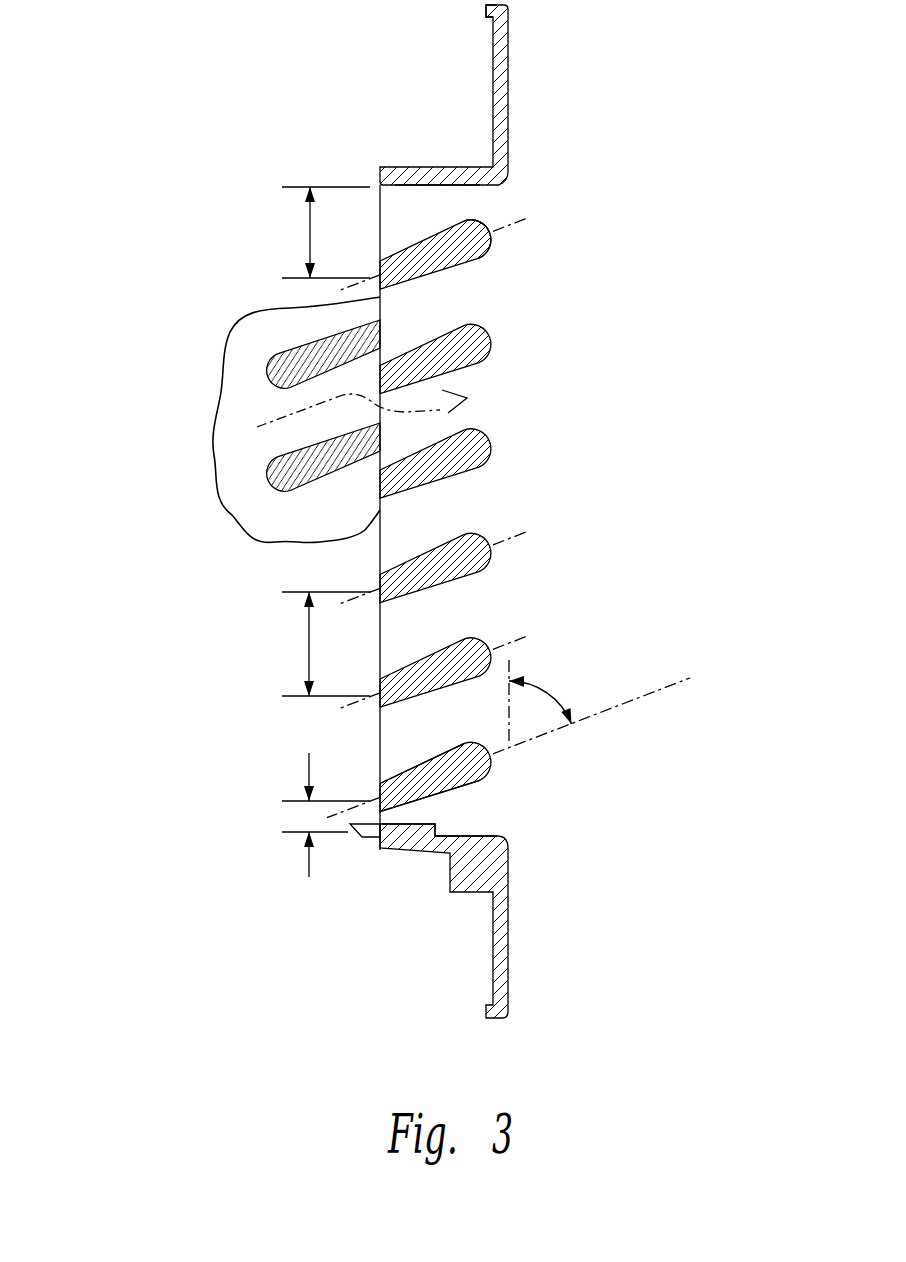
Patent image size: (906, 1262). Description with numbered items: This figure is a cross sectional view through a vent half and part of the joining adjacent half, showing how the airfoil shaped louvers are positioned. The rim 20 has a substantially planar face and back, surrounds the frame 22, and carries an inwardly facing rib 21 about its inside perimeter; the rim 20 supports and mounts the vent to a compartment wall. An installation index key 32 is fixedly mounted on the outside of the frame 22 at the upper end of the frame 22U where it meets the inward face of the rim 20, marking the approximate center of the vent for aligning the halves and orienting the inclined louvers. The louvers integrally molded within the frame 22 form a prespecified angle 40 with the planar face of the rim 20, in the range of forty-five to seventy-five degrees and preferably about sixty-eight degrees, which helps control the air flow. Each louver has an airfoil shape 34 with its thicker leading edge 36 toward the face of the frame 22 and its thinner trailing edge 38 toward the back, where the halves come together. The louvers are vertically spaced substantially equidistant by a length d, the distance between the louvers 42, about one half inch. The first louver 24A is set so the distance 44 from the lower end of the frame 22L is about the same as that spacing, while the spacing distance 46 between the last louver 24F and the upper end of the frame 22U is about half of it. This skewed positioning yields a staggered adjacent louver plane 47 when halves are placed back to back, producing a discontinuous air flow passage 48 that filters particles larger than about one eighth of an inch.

The rim 20 is at (509, 86).
The inwardly facing rib 21 is at (487, 14).
The frame 22 is at (435, 167).
The lower end of frame 22L is at (437, 187).
The upper end of frame 22U is at (490, 829).
The first louver 24A is at (457, 268).
The last louver 24F is at (494, 762).
The installation index key 32 is at (450, 883).
The airfoil shape 34 is at (495, 238).
The leading edge 36 is at (450, 793).
The trailing edge 38 is at (398, 774).
The angle 40 is at (557, 692).
The distance between the louvers 42 is at (307, 627).
The distance 22L-24A 44 is at (310, 236).
The spacing distance 24F-22U 46 is at (308, 862).
The staggered adjacent louver plane 47 is at (257, 405).
The discontinuous air flow passage 48 is at (467, 402).